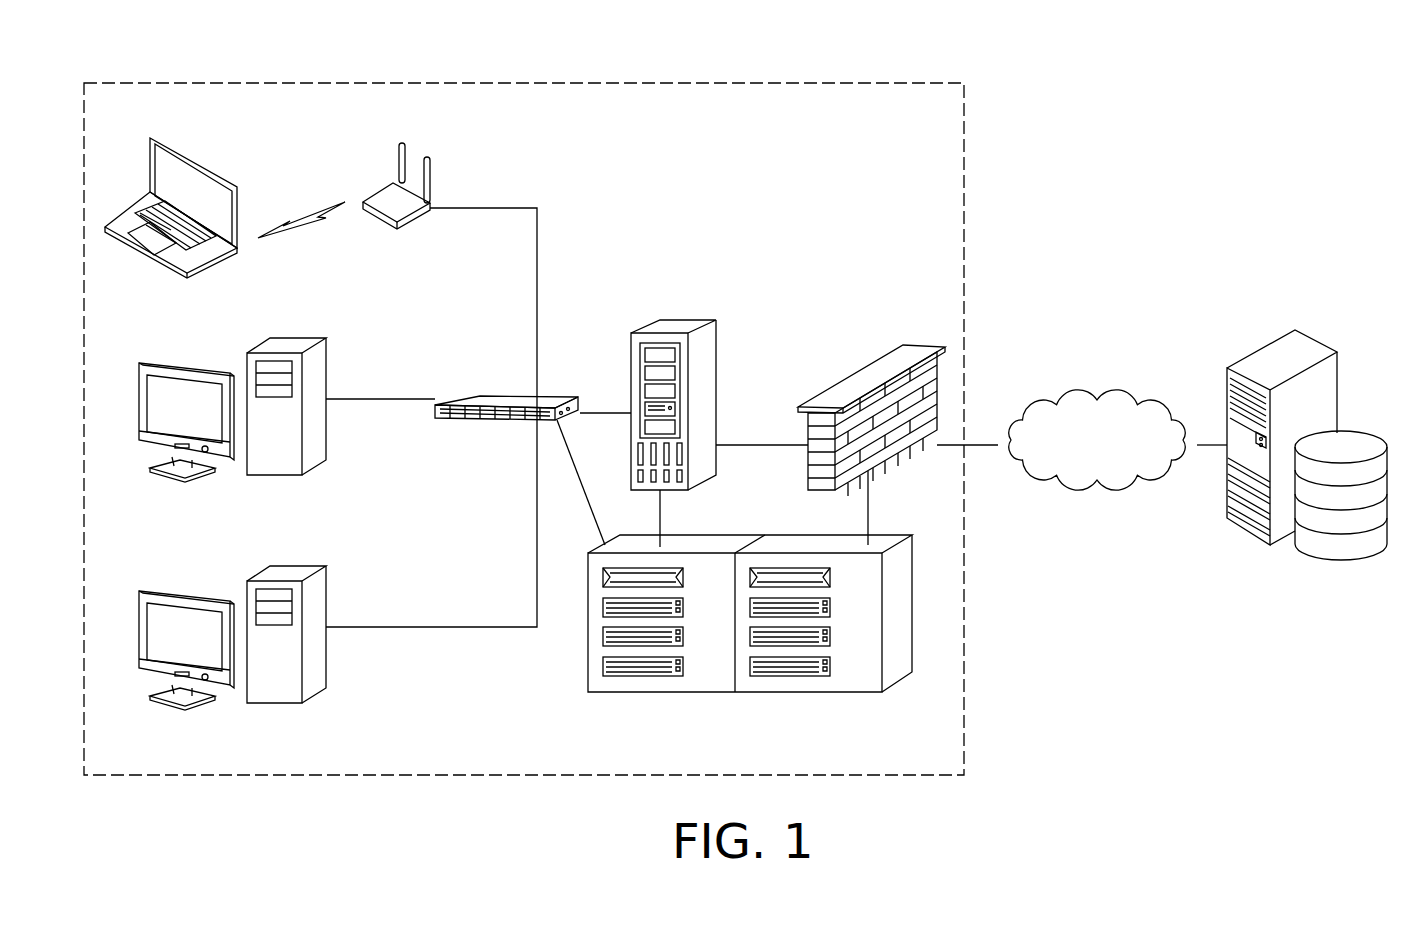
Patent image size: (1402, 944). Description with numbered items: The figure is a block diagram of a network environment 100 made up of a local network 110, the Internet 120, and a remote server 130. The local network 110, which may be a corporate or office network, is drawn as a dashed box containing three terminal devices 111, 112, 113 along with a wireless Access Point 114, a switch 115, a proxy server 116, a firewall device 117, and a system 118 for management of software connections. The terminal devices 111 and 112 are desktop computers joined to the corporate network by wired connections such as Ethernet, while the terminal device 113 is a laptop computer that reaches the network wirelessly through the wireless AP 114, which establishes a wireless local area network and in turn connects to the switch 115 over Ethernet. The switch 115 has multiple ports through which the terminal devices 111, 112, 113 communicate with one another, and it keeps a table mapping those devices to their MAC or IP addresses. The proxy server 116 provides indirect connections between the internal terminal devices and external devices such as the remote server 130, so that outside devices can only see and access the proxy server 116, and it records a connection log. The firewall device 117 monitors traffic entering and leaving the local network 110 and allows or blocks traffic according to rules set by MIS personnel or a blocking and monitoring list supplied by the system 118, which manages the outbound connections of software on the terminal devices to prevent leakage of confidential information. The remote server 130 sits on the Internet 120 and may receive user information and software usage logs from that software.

The network environment 100 is at (1204, 113).
The local network 110 is at (84, 83).
The terminal device 111 is at (233, 608).
The terminal device 112 is at (287, 343).
The terminal device 113 is at (193, 158).
The wireless Access Point (AP) 114 is at (383, 196).
The switch 115 is at (503, 400).
The proxy server 116 is at (677, 328).
The firewall device 117 is at (913, 348).
The system for management of software connections 118 is at (730, 693).
The Internet 120 is at (1098, 384).
The remote server 130 is at (1305, 350).